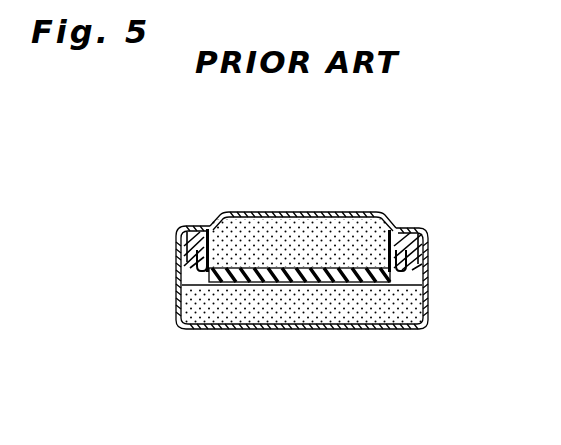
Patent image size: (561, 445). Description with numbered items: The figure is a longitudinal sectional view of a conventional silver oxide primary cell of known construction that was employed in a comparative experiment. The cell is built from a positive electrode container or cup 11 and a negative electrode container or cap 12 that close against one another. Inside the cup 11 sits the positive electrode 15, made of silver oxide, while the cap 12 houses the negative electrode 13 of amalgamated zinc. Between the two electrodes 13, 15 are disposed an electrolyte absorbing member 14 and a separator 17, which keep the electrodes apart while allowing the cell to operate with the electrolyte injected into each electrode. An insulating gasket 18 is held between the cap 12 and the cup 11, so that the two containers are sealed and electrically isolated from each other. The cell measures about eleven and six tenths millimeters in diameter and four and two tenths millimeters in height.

The positive electrode container or cup 11 is at (401, 306).
The negative electrode container or cap 12 is at (302, 213).
The negative electrode 13 is at (325, 243).
The electrolyte absorbing member 14 is at (258, 272).
The positive electrode 15 is at (335, 303).
The separator 17 is at (252, 284).
The insulating gasket 18 is at (417, 235).